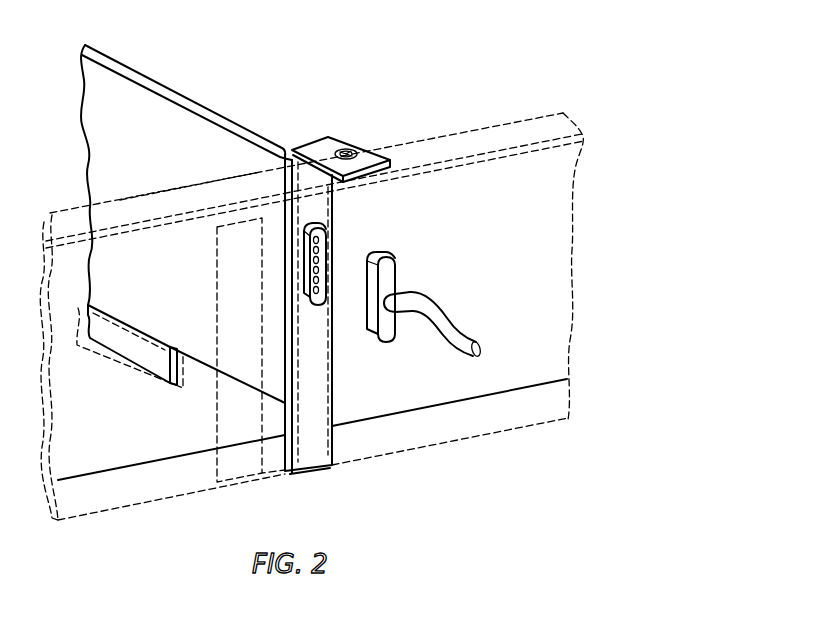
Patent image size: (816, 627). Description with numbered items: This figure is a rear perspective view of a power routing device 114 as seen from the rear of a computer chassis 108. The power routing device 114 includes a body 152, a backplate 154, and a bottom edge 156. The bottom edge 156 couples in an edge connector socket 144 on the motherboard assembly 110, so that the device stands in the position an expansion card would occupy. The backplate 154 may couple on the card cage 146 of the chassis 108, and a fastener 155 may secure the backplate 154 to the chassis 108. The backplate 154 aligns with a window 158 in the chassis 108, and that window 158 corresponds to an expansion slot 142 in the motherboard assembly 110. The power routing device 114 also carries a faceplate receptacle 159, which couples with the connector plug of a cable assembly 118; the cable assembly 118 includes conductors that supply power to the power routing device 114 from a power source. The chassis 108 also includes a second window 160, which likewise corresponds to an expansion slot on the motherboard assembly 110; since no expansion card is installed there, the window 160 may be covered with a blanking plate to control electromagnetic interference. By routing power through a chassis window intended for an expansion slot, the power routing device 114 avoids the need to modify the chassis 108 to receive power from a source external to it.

The chassis 108 is at (55, 211).
The motherboard assembly 110 is at (114, 449).
The power routing device 114 is at (244, 83).
The cable assembly 118 is at (421, 338).
The expansion slot 142 is at (127, 305).
The edge connector socket 144 is at (120, 368).
The card cage 146 is at (187, 186).
The body 152 is at (277, 125).
The backplate 154 is at (338, 142).
The fastener 155 is at (352, 151).
The bottom edge 156 is at (172, 384).
The window 158 is at (316, 455).
The faceplate receptacle 159 is at (326, 226).
The window 160 is at (232, 466).